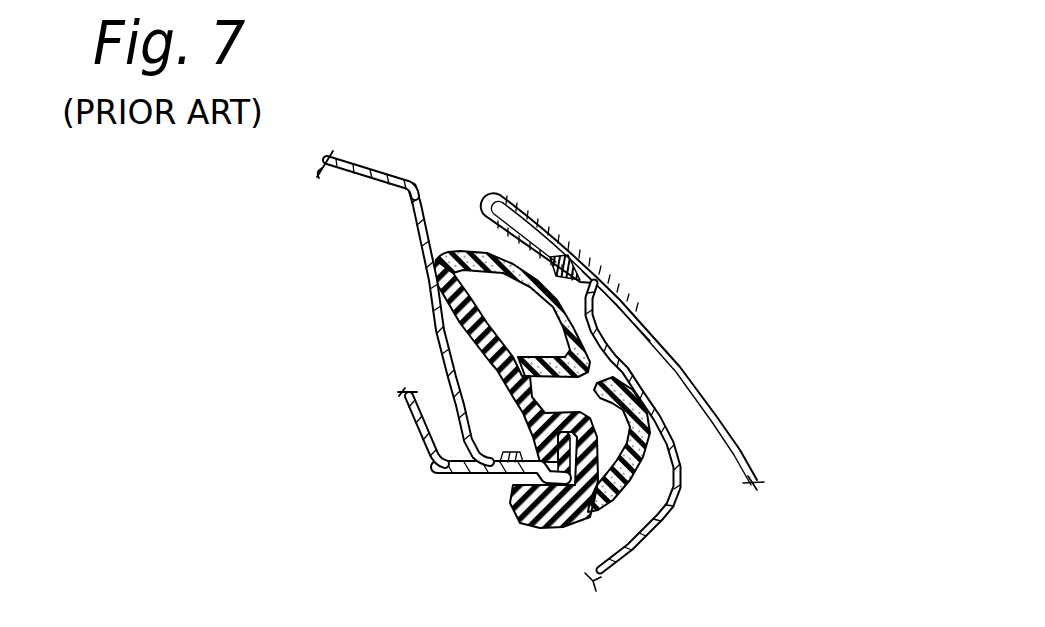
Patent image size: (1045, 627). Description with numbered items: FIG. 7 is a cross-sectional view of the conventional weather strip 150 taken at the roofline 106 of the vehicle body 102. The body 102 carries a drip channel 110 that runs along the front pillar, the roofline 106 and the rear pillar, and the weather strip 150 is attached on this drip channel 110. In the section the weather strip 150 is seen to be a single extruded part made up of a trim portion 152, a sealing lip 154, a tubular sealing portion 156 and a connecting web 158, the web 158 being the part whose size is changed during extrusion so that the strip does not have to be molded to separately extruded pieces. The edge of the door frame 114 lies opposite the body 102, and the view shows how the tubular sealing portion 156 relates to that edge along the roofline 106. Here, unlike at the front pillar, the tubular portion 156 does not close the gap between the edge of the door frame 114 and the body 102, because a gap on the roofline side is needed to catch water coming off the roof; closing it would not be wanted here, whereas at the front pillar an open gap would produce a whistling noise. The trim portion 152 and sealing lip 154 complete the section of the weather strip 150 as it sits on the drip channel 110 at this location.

The vehicle body 102 is at (428, 303).
The roofline 106 is at (384, 172).
The drip channel 110 is at (490, 473).
The door frame 114 is at (643, 310).
The weather strip 150 is at (541, 377).
The trim portion 152 is at (533, 529).
The sealing lip 154 is at (612, 506).
The tubular sealing portion 156 is at (511, 264).
The connecting web 158 is at (512, 395).